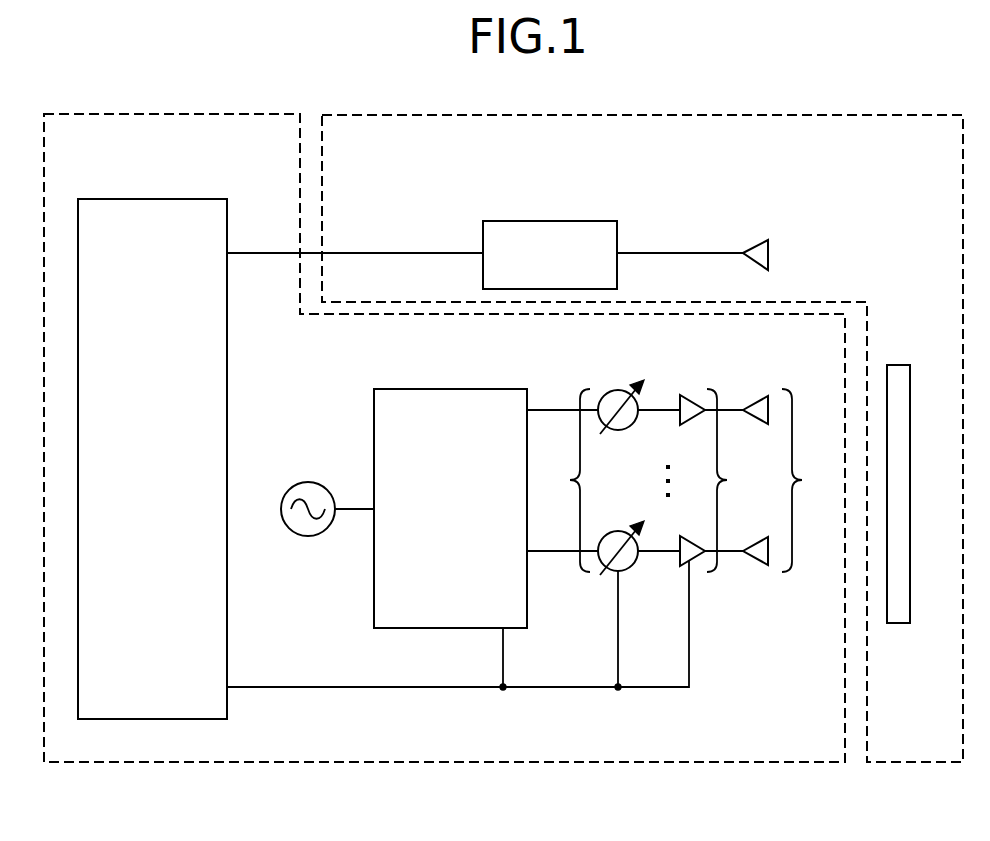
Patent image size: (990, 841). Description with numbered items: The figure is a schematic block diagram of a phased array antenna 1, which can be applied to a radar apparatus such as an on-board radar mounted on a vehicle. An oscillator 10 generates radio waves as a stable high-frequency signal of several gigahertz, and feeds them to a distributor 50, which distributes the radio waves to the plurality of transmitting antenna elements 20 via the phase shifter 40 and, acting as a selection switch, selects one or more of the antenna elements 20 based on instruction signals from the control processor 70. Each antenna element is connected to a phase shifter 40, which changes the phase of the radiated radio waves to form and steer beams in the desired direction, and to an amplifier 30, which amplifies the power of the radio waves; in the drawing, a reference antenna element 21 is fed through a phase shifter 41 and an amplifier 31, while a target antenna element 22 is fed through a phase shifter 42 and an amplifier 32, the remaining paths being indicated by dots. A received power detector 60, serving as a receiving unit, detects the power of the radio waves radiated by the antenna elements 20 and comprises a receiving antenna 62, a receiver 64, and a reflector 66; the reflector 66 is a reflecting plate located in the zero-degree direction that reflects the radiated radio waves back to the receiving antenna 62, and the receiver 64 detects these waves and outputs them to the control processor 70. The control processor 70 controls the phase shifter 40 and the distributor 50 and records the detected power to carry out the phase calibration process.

The phased array antenna 1 is at (742, 762).
The oscillator 10 is at (308, 482).
The transmitting antenna elements 20 is at (775, 478).
The reference antenna element 21 is at (780, 570).
The target antenna element 22 is at (762, 397).
The amplifier 30 is at (705, 478).
The amplifier 31 is at (690, 563).
The amplifier 32 is at (688, 395).
The phase shifter 40 is at (609, 478).
The phase shifter 41 is at (633, 563).
The phase shifter 42 is at (607, 393).
The distributor 50 is at (495, 389).
The received power detector 60 is at (752, 113).
The receiving antenna 62 is at (762, 241).
The receiver 64 is at (500, 221).
The reflector 66 is at (897, 365).
The control processor 70 is at (186, 199).